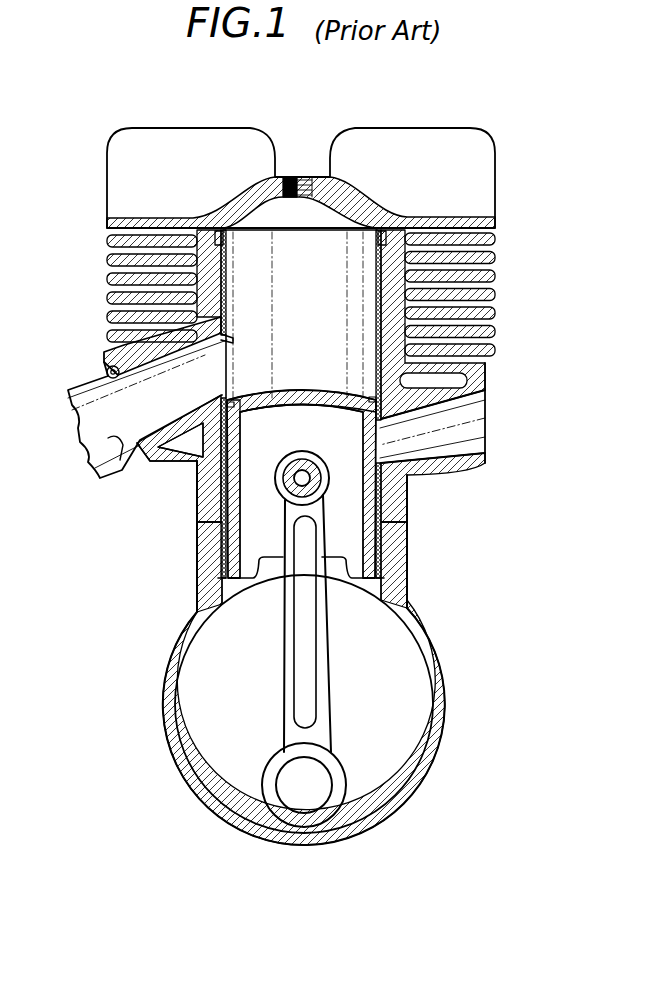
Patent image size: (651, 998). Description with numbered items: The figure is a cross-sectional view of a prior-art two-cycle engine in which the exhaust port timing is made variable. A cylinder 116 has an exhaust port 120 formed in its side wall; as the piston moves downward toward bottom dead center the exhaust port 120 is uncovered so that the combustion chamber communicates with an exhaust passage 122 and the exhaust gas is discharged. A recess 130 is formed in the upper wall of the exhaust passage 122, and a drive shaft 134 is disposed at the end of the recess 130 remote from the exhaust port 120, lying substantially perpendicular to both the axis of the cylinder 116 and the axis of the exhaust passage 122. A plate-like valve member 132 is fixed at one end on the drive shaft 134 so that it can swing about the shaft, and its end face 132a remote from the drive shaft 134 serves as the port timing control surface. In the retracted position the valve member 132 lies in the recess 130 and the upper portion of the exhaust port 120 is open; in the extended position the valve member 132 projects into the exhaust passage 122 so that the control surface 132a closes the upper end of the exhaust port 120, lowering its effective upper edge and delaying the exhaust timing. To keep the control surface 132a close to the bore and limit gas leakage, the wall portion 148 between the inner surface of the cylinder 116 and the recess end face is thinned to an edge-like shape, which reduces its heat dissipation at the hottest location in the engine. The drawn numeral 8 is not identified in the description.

The cylinder 116 is at (360, 227).
The recess 130 is at (226, 288).
The wall portion 148 is at (226, 316).
The end face 132a is at (235, 340).
The valve member 132 is at (166, 367).
The drive shaft 134 is at (107, 369).
The exhaust passage 122 is at (102, 468).
The exhaust port 120 is at (262, 408).
The crankcase 8 is at (245, 568).